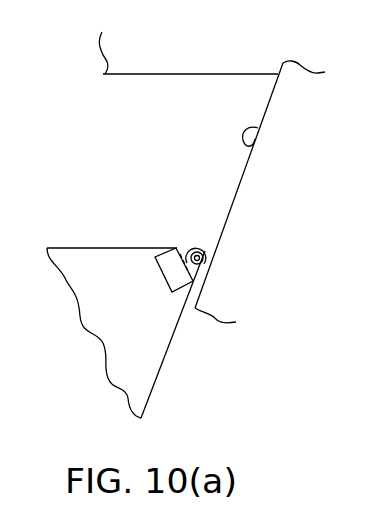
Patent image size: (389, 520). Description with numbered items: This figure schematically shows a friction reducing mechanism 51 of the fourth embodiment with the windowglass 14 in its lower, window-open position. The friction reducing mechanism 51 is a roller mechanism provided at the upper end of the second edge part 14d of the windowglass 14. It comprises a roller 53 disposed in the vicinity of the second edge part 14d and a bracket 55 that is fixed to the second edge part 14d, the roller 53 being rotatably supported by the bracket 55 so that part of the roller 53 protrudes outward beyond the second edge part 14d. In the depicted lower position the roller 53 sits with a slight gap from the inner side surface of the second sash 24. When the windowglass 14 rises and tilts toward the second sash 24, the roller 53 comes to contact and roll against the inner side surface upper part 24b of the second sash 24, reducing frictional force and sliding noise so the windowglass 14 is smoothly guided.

The windowglass 14 is at (122, 355).
The second edge part 14d is at (160, 368).
The second sash 24 is at (255, 210).
The inner side surface upper part 24b is at (258, 130).
The friction reducing mechanism 51 is at (170, 208).
The roller 53 is at (203, 246).
The bracket 55 is at (164, 248).